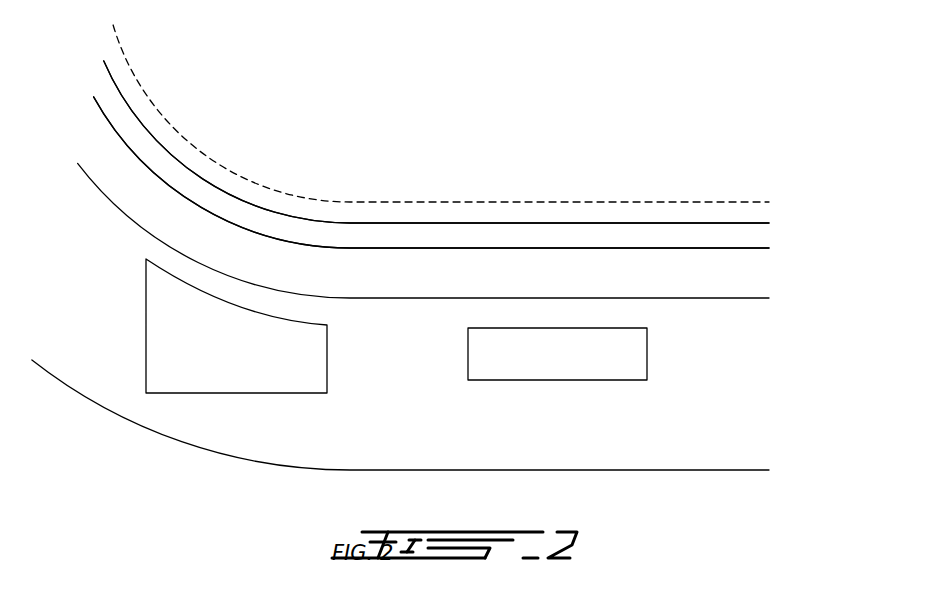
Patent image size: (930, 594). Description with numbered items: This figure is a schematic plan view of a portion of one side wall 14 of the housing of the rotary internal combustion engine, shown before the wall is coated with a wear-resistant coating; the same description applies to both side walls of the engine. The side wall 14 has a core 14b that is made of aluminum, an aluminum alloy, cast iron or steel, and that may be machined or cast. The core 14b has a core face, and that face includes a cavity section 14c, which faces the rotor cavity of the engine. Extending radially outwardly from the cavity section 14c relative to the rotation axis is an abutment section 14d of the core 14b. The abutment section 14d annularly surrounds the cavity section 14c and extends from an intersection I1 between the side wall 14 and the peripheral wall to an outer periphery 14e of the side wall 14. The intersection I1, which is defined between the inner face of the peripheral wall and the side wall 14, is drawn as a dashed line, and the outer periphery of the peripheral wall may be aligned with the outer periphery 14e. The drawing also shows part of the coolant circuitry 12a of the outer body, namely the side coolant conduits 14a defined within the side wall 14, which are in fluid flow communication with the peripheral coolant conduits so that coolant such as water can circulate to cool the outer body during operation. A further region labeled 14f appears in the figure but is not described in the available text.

The side wall 14 is at (707, 100).
The intersection I1 is at (150, 93).
The core 14b is at (438, 142).
The cavity section 14c is at (355, 122).
The abutment section 14d is at (602, 237).
The outer periphery 14e is at (733, 471).
The sixth surface of light guide 14f is at (703, 270).
The coolant circuitry 12a is at (275, 363).
The side coolant conduits 14a is at (545, 360).